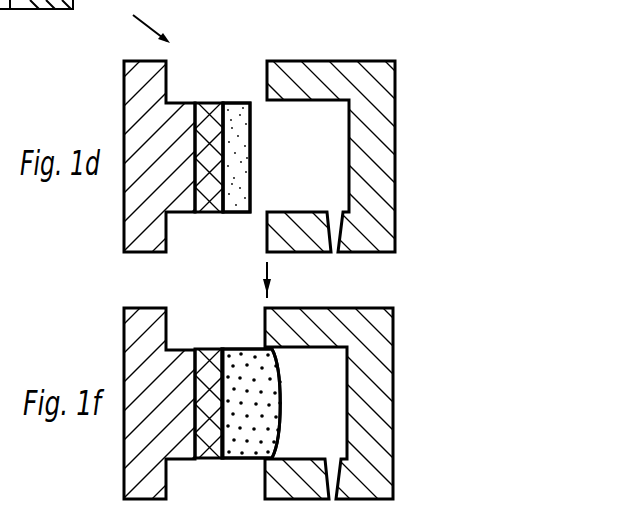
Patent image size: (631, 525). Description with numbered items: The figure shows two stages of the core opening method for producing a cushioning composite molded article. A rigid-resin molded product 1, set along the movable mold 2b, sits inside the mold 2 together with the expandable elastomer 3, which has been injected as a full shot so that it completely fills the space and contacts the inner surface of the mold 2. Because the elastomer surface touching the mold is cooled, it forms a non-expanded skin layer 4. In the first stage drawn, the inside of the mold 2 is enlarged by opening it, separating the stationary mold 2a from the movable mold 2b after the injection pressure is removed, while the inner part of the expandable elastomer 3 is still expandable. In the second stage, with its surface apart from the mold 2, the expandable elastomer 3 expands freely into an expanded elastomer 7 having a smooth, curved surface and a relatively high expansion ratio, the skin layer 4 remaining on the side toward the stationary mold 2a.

In FIG. 1D, the rigid-resin molded product 1 is at (213, 106).
In FIG. 1F, the rigid-resin molded product 1 is at (213, 350).
In FIG. 1D, the mold 2 is at (346, 56).
In FIG. 1F, the mold 2 is at (387, 302).
In FIG. 1D, the stationary mold 2a is at (395, 115).
In FIG. 1F, the stationary mold 2a is at (393, 340).
In FIG. 1D, the movable mold 2b is at (124, 98).
In FIG. 1F, the movable mold 2b is at (124, 322).
In FIG. 1D, the expandable elastomer 3 is at (251, 133).
In FIG. 1D, the skin layer 4 is at (251, 172).
In FIG. 1F, the skin layer 4 is at (283, 380).
In FIG. 1F, the expanded elastomer 7 is at (273, 430).